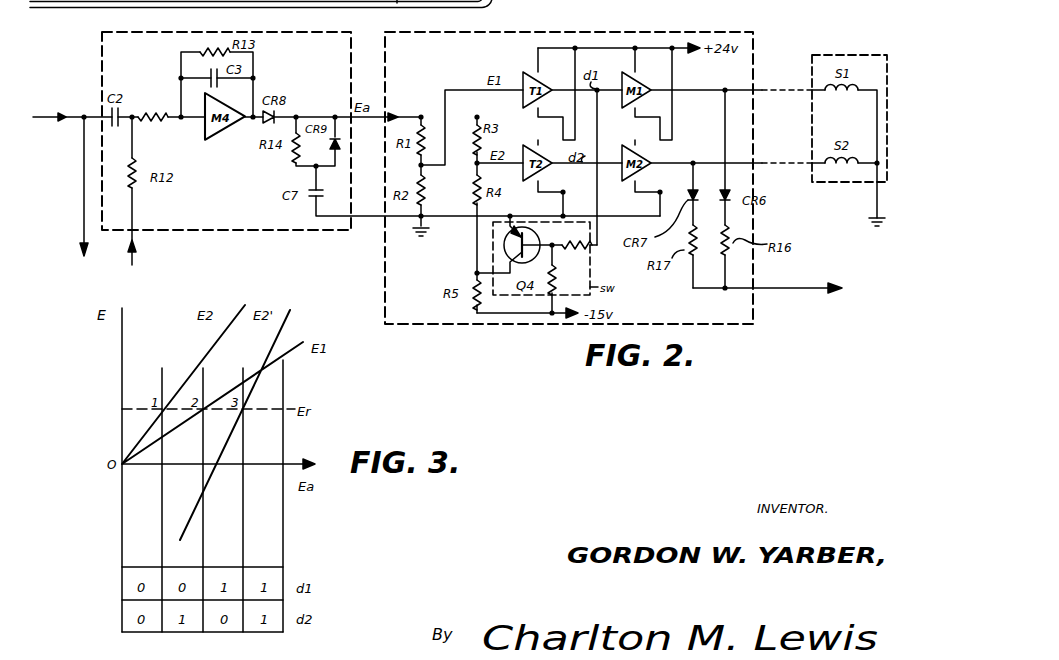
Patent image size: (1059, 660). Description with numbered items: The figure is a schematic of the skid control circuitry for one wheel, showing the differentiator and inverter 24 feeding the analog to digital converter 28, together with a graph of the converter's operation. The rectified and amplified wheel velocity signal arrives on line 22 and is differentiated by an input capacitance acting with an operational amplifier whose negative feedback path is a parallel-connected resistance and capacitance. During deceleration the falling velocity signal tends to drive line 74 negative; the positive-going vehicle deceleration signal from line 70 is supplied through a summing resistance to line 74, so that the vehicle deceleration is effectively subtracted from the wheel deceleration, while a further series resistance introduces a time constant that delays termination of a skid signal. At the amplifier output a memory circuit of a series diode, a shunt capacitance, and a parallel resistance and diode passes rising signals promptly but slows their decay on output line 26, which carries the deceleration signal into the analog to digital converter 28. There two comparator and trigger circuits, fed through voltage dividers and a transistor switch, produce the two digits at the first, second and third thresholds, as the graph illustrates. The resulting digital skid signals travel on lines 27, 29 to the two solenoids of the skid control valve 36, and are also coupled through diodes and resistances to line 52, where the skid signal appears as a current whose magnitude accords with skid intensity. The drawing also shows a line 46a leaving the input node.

The line 22 is at (76, 121).
The output line 46a is at (84, 190).
The line 70 is at (134, 207).
The differentiator and inverter 24 is at (187, 232).
The line 74 is at (144, 110).
The output line 26 is at (414, 112).
The analog to digital converter 28 is at (684, 34).
The line 27 is at (765, 88).
The line 29 is at (767, 161).
The skid control valve 36 is at (828, 48).
The line 52 is at (772, 291).